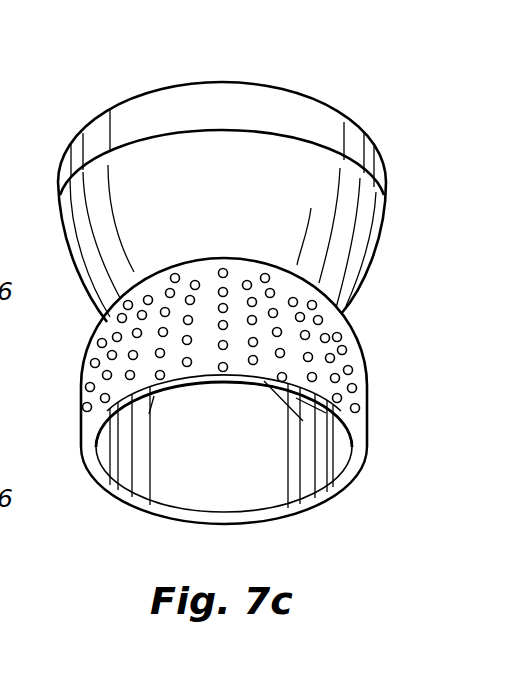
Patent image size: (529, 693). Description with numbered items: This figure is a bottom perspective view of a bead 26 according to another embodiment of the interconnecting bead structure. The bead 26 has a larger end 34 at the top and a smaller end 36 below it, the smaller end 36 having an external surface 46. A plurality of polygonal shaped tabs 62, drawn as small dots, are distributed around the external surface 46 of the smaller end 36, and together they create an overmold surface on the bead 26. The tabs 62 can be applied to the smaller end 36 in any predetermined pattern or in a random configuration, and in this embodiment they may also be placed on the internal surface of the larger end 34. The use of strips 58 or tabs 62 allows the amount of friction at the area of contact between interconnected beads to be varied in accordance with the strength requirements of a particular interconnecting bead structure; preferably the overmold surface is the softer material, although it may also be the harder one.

The bead 26 is at (137, 83).
The larger end 34 is at (103, 193).
The smaller end 36 is at (122, 363).
The external surface 46 is at (367, 442).
The strips 58 is at (248, 280).
The polygonal shaped tabs 62 is at (132, 332).